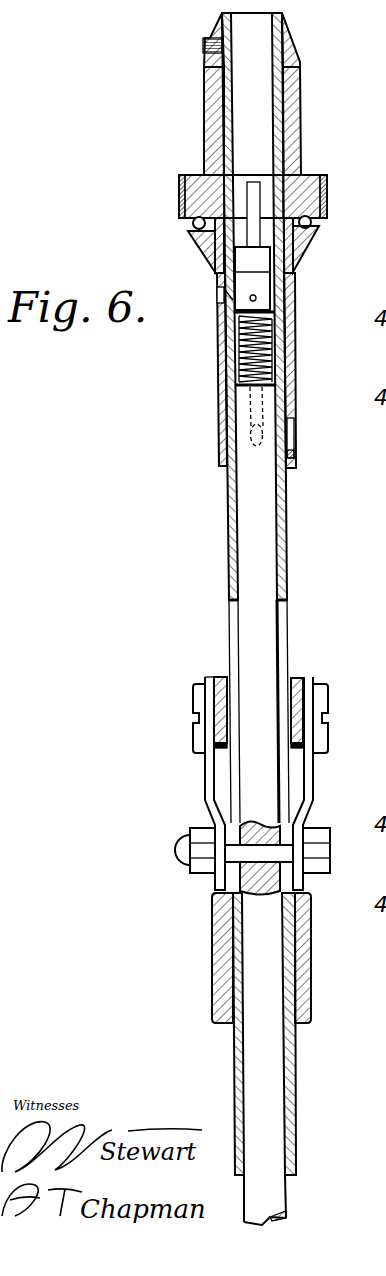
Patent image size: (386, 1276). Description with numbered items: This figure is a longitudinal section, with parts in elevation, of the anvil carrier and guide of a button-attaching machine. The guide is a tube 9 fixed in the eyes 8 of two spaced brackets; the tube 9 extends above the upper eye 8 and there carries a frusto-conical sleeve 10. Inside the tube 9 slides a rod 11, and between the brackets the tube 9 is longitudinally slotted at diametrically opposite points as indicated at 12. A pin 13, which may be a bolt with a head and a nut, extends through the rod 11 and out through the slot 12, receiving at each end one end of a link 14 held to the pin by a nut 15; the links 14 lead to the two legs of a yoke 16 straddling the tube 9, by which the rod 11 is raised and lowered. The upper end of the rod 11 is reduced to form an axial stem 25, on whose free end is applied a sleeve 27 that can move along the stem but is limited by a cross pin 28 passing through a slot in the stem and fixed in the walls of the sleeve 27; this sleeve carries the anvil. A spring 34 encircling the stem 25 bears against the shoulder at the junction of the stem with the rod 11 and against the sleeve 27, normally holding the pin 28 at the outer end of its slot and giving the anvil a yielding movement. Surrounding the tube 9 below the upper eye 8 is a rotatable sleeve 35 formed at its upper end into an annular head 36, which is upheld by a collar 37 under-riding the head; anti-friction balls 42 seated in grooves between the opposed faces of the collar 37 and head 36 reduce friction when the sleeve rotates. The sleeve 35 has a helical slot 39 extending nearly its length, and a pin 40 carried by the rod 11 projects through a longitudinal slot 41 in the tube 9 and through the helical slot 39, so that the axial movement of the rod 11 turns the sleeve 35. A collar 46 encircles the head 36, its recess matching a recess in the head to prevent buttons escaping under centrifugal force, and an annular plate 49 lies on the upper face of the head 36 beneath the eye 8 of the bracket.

The eye 8 is at (295, 122).
The tube 9 is at (229, 523).
The frusto-conical sleeve 10 is at (288, 52).
The rod 11 is at (265, 535).
The slot 12 is at (230, 624).
The pin 13 is at (257, 854).
The link 14 is at (205, 789).
The nut 15 is at (203, 838).
The yoke 16 is at (300, 678).
The axial stem 25 is at (283, 363).
The sleeve 27 is at (228, 306).
The cross pin 28 is at (258, 298).
The spring 34 is at (224, 372).
The sleeve 35 is at (294, 333).
The annular head 36 is at (328, 194).
The collar 37 is at (312, 240).
The helical slot 39 is at (217, 294).
The pin 40 is at (250, 438).
The longitudinal slot 41 is at (257, 190).
The anti-friction balls 42 is at (193, 224).
The collar 46 is at (183, 193).
The plate 49 is at (308, 174).